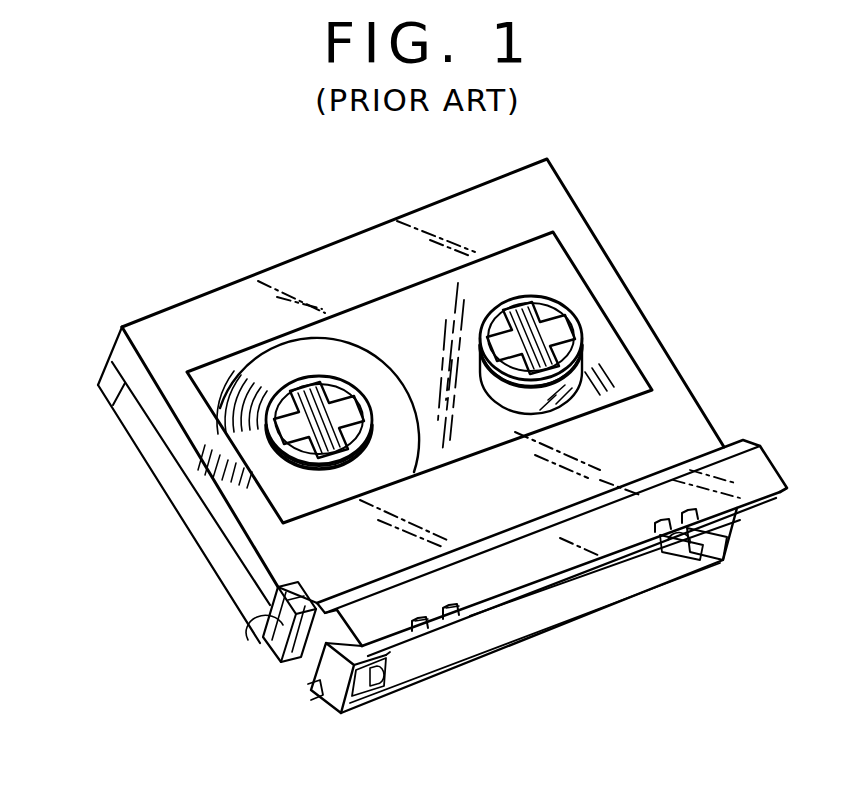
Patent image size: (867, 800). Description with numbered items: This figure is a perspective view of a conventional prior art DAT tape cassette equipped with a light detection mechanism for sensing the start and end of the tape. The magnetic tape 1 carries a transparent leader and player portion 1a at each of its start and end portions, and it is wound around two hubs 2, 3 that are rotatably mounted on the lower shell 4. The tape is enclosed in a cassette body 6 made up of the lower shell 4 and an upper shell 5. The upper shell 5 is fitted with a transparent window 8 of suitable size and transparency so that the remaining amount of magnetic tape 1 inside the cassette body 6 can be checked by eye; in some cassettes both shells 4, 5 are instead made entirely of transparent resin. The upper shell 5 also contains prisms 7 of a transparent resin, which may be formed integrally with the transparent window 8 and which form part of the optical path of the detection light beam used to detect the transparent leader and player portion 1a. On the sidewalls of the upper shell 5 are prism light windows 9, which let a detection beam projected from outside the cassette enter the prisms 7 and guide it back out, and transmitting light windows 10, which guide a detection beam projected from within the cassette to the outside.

The magnetic tape 1 is at (282, 398).
The transparent leader and player portion 1a is at (677, 572).
The hub 2 is at (567, 322).
The hub 3 is at (293, 387).
The lower shell 4 is at (203, 522).
The upper shell 5 is at (237, 540).
The cassette body 6 is at (132, 540).
The prism 7 is at (552, 548).
The transparent window 8 is at (468, 293).
The prism light window 9 is at (250, 636).
The transmitting light window 10 is at (272, 650).